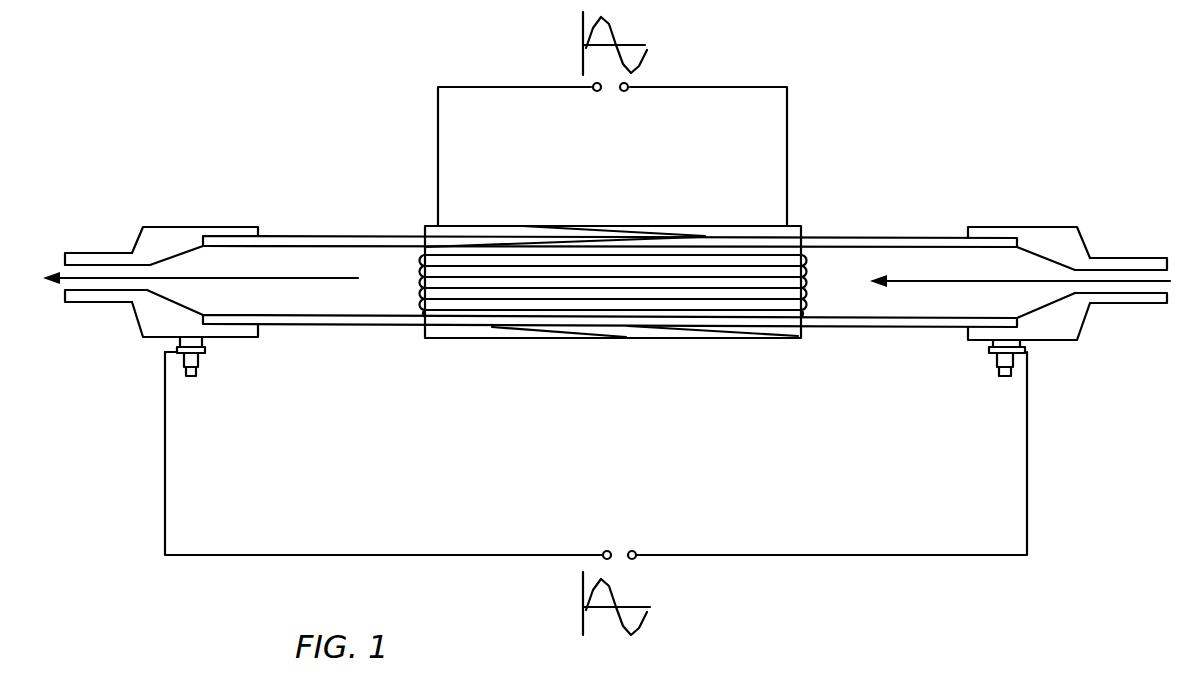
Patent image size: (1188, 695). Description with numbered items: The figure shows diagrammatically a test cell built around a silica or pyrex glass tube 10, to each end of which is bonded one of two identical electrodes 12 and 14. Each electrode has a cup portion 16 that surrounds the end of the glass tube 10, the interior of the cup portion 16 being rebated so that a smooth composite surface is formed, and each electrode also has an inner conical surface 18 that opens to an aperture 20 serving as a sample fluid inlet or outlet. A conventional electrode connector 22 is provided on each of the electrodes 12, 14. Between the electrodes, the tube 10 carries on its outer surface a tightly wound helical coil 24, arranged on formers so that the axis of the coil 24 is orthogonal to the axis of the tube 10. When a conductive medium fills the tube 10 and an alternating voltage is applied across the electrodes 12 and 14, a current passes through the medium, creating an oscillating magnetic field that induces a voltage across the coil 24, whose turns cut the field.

The glass tube 10 is at (862, 236).
The electrode 12 is at (968, 344).
The electrode 14 is at (200, 222).
The cup portion 16 is at (246, 227).
The inner conical surface 18 is at (185, 253).
The aperture 20 is at (108, 292).
The electrode connector 22 is at (193, 377).
The helical coil 24 is at (628, 338).